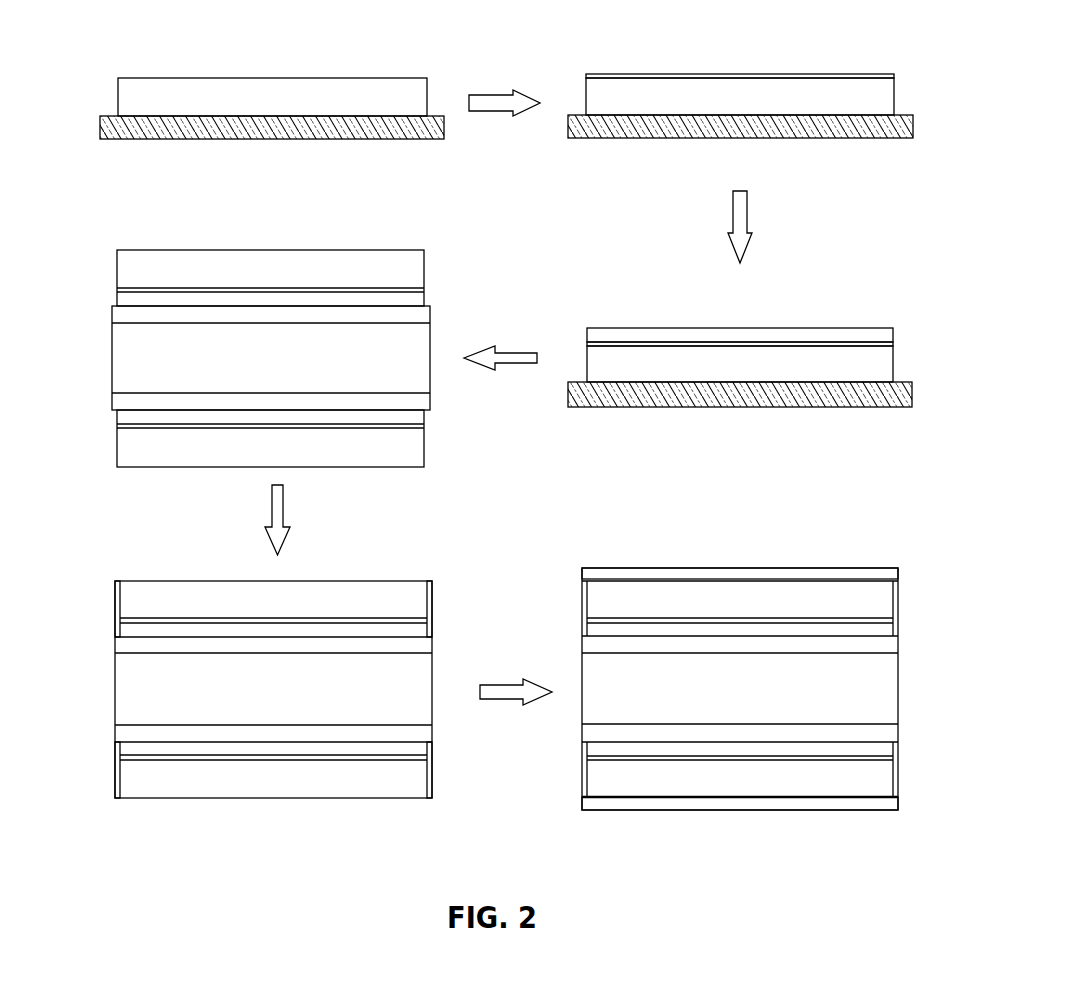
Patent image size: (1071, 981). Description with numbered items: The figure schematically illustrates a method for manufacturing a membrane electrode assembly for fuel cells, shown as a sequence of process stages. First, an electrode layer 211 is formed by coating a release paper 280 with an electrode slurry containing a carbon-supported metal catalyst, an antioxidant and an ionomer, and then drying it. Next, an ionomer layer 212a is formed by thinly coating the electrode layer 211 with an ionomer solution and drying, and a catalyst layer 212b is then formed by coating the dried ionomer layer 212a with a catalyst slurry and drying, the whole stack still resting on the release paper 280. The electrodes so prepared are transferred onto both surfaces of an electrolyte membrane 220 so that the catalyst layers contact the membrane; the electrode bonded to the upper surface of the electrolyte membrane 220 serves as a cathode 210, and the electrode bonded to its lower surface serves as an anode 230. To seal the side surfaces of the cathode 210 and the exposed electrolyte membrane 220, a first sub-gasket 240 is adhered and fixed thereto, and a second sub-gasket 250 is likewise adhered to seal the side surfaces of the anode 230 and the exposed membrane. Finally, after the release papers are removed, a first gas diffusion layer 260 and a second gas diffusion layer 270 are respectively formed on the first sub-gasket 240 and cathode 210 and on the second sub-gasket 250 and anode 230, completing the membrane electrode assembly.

The cathode 210 is at (100, 250).
The electrode layer 211 is at (186, 88).
The ionomer layer 212a is at (722, 75).
The catalyst layer 212b is at (702, 335).
The electrolyte membrane 220 is at (100, 308).
The anode 230 is at (100, 411).
The first sub-gasket 240 is at (115, 603).
The second sub-gasket 250 is at (115, 772).
The first gas diffusion layer 260 is at (905, 568).
The second gas diffusion layer 270 is at (905, 797).
The release paper 280 is at (270, 128).